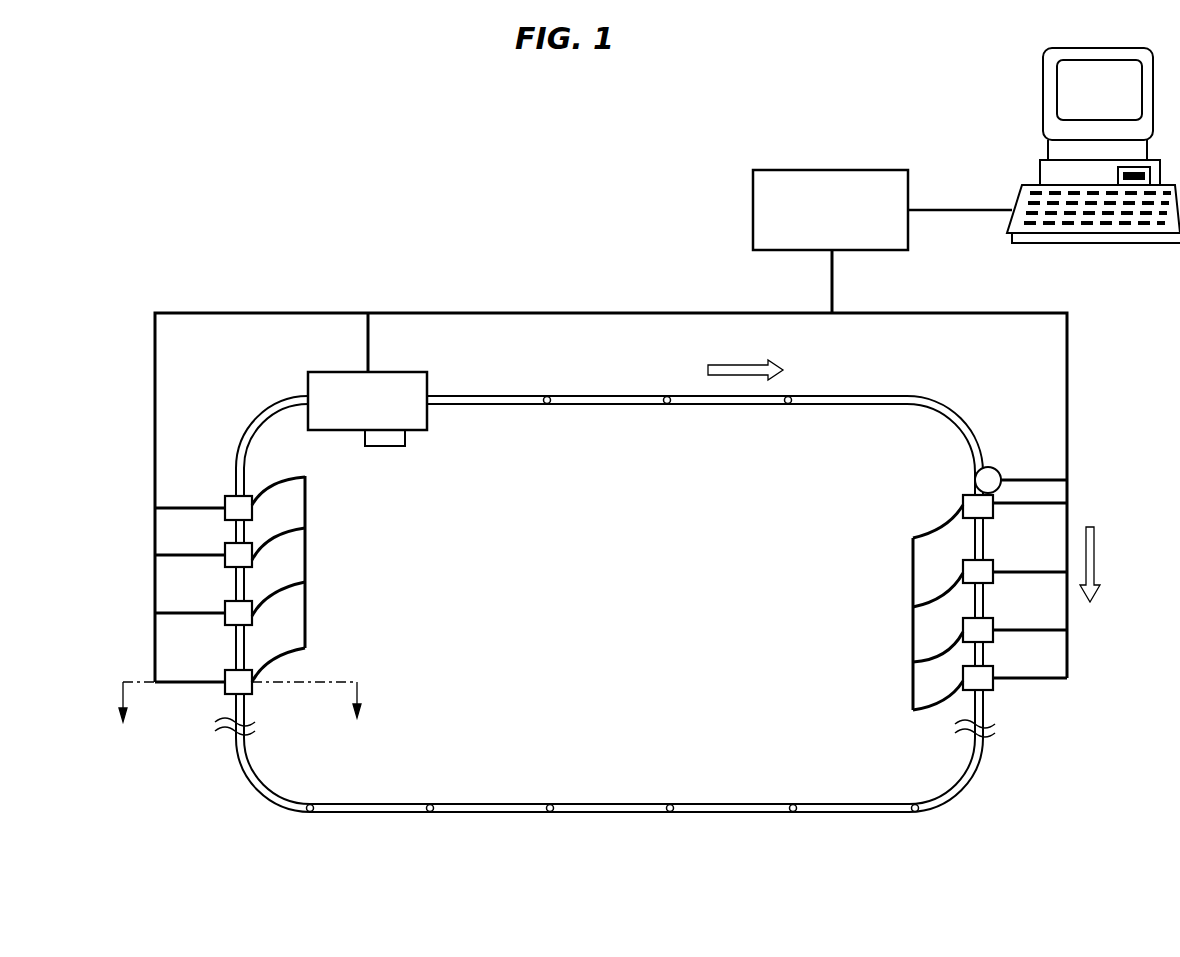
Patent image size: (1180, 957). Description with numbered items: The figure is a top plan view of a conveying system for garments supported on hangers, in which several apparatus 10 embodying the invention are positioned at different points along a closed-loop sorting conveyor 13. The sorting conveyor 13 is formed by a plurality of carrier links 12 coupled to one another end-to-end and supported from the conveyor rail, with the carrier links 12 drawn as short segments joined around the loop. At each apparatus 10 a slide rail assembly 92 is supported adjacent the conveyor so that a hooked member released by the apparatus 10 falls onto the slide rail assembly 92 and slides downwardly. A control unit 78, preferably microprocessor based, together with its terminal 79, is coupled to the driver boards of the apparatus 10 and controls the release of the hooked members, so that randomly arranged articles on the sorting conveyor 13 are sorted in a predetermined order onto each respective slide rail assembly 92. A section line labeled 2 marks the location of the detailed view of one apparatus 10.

The apparatus 10 is at (210, 495).
The carrier link 12 is at (262, 780).
The sorting conveyor 13 is at (657, 608).
The control unit 78 is at (812, 170).
The terminal 79 is at (1043, 78).
The slide rail assembly 92 is at (280, 488).
The section line 2- 2 is at (237, 690).